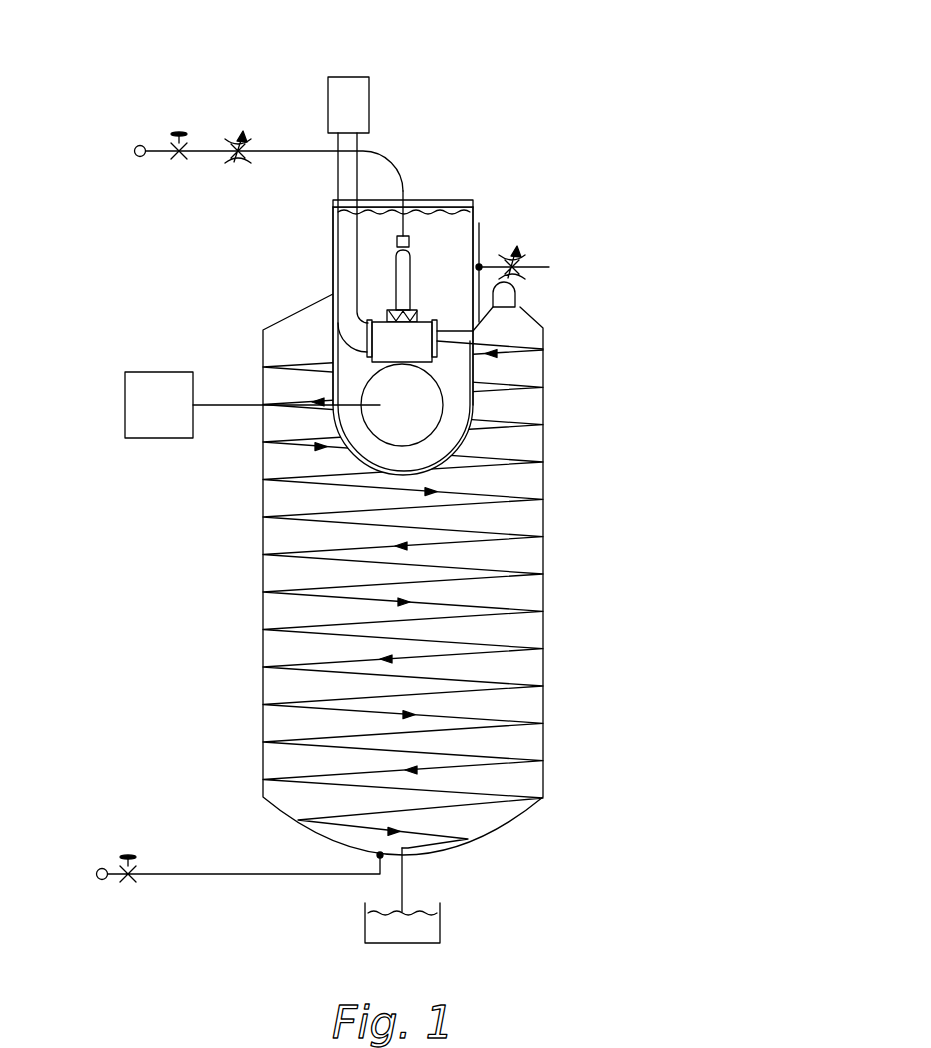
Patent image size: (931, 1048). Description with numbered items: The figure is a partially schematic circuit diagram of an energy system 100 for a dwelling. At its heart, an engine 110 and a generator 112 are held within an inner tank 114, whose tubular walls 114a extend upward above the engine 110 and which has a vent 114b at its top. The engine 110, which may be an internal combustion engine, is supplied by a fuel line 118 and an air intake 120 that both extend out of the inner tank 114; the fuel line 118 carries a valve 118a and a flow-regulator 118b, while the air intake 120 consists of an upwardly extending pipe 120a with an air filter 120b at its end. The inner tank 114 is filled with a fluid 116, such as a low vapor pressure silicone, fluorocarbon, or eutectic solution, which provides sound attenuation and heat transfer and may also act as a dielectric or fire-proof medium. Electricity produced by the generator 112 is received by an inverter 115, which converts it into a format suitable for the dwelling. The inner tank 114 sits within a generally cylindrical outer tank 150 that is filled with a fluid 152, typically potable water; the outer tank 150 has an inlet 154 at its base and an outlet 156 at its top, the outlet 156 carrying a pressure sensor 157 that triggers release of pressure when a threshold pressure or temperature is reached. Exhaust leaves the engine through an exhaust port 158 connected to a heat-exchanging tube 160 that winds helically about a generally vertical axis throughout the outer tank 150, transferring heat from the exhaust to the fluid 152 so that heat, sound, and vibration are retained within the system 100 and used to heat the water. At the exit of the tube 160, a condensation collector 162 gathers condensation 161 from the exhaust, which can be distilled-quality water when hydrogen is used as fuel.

The energy system 100 is at (355, 499).
The engine 110 is at (425, 362).
The generator 112 is at (430, 408).
The inner tank 114 is at (390, 298).
The tubular walls 114a is at (333, 252).
The vent 114b is at (456, 190).
The inverter 115 is at (153, 372).
The fluid 116 is at (433, 212).
The fuel line 118 is at (305, 144).
The valve 118a is at (179, 133).
The flow-regulator 118b is at (233, 158).
The air intake 120 is at (353, 209).
The pipe 120a is at (345, 165).
The air filter 120b is at (370, 90).
The outer tank 150 is at (545, 637).
The fluid 152 is at (527, 705).
The inlet 154 is at (380, 855).
The outlet 156 is at (549, 267).
The pressure sensor 157 is at (516, 292).
The exhaust port 158 is at (517, 307).
The heat-exchanging tube 160 is at (442, 599).
The condensation 161 is at (410, 920).
The condensation collector 162 is at (420, 943).